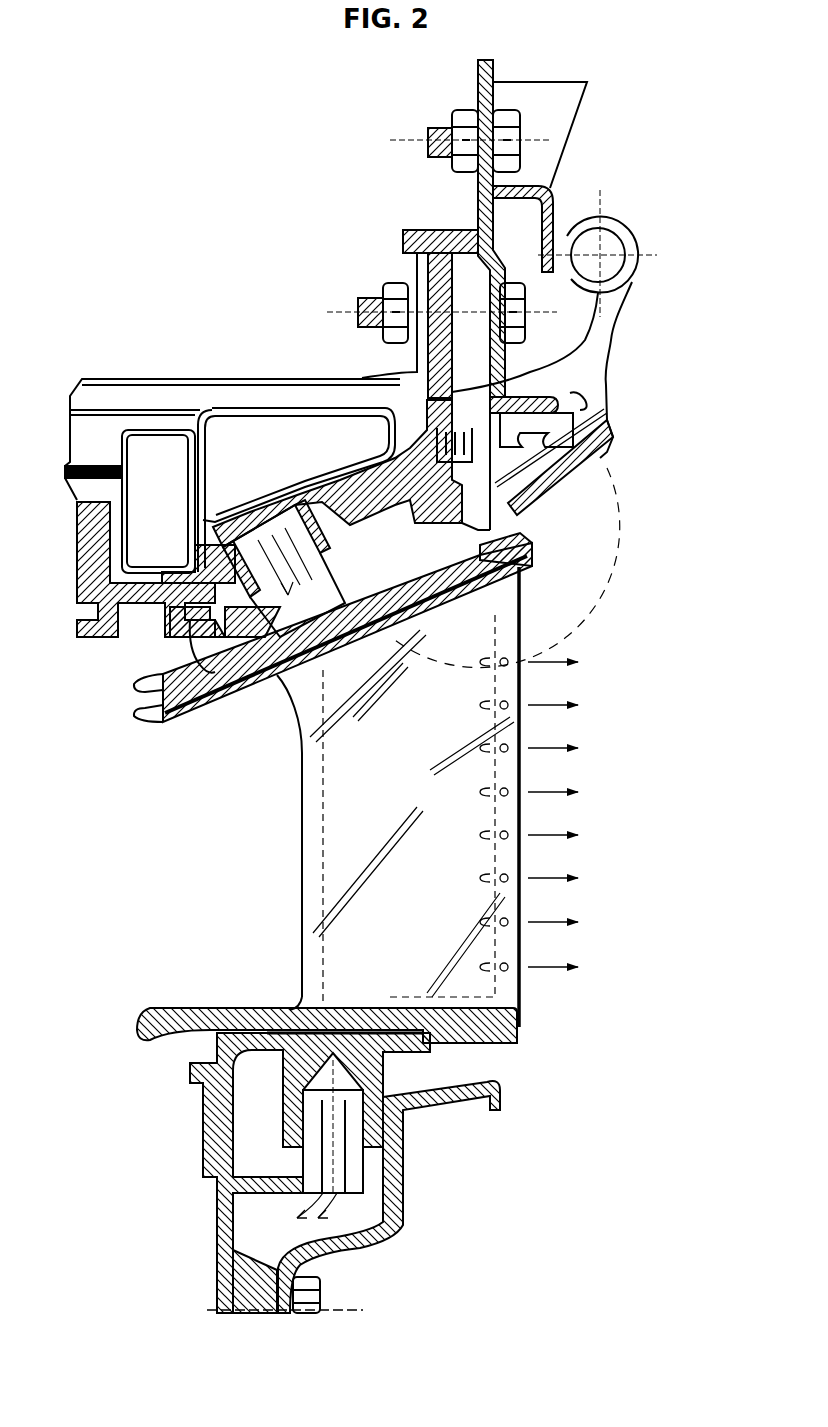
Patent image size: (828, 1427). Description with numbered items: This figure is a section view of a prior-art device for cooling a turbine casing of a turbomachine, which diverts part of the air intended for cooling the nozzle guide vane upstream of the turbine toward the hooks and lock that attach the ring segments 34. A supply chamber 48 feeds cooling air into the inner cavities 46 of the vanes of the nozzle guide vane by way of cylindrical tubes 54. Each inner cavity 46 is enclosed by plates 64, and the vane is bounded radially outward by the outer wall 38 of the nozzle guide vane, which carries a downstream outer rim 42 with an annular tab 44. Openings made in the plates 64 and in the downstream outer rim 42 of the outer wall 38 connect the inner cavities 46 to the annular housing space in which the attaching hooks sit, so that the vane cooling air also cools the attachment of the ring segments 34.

The ring segments 34 is at (607, 468).
The outer wall 38 is at (192, 720).
The downstream outer rim 42 is at (419, 797).
The annular tab 44 is at (495, 515).
The inner cavities 46 is at (328, 768).
The supply chamber 48 is at (299, 465).
The cylindrical tubes 54 is at (330, 550).
The plates 64 is at (350, 677).